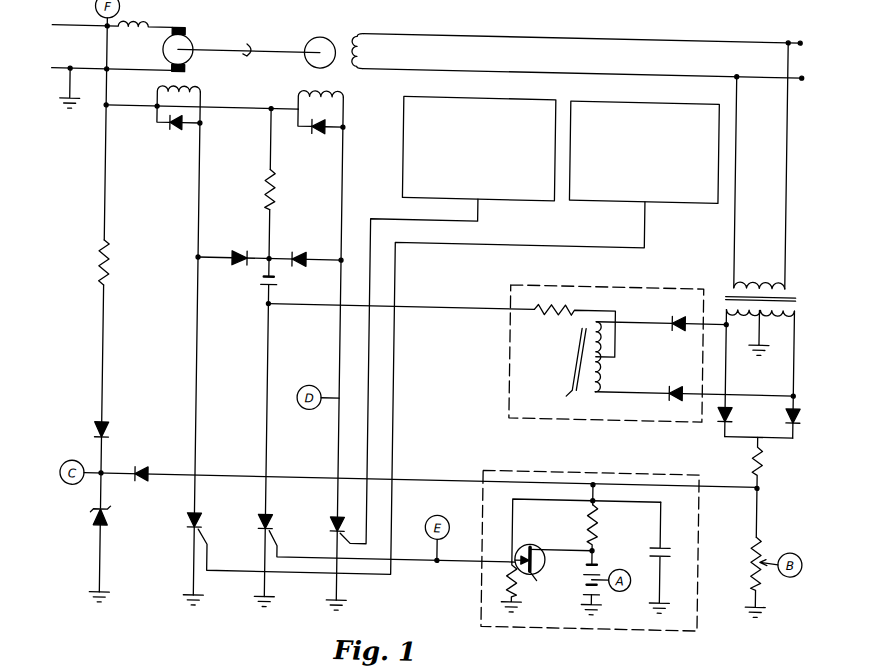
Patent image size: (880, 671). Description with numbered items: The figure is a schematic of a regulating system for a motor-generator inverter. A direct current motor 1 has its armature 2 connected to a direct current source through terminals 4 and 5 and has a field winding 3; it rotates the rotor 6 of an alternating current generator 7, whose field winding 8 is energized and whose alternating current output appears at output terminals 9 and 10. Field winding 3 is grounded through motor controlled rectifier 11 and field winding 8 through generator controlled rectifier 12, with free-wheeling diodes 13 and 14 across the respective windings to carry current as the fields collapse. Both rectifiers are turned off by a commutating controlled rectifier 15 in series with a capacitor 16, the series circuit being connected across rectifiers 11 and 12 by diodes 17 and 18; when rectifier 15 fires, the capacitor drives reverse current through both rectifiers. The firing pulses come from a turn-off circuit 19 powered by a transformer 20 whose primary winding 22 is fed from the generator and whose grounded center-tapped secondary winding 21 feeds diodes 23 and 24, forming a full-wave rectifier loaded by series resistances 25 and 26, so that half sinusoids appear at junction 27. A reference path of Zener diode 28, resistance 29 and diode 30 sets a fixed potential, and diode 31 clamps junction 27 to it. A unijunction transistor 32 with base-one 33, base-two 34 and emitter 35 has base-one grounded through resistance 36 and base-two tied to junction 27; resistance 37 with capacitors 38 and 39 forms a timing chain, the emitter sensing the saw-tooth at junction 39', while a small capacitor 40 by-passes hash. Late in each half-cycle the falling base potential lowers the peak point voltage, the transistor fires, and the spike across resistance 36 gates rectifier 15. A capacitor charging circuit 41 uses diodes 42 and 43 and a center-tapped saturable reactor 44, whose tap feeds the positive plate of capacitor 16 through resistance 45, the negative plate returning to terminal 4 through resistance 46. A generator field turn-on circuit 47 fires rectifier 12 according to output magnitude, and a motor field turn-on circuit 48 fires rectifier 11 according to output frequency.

The direct current motor 1 is at (193, 67).
The motor armature 2 is at (197, 42).
The motor field winding 3 is at (152, 89).
The positive terminal 4 is at (52, 26).
The terminal 5 is at (50, 70).
The rotor 6 is at (300, 39).
The alternating current generator 7 is at (302, 67).
The generator field winding 8 is at (339, 88).
The generator A.C. output terminal 9 is at (795, 27).
The generator A.C. output terminal 10 is at (795, 70).
The motor controlled rectifier 11 is at (189, 513).
The generator controlled rectifier 12 is at (332, 517).
The free-wheeling diode 13 is at (172, 131).
The free-wheeling diode 14 is at (317, 131).
The commutating controlled rectifier 15 is at (261, 512).
The capacitor 16 is at (273, 283).
The diode 17 is at (232, 245).
The diode 18 is at (301, 250).
The turn-off circuit 19 is at (489, 458).
The transformer 20 is at (790, 276).
The secondary winding 21 is at (776, 298).
The primary winding 22 is at (758, 271).
The diode 23 is at (719, 413).
The diode 24 is at (783, 402).
The resistance 25 is at (763, 449).
The resistance 26 is at (763, 536).
The junction 27 is at (595, 472).
The Zener diode 28 is at (93, 523).
The resistance 29 is at (94, 275).
The diode 30 is at (94, 425).
The diode 31 is at (148, 467).
The unijunction transistor 32 is at (536, 535).
The base-one element 33 is at (536, 569).
The base-two element 34 is at (514, 549).
The emitter element 35 is at (539, 542).
The resistance 36 is at (512, 574).
The resistance 37 is at (598, 512).
The capacitor 38 is at (596, 556).
The capacitor 39 is at (578, 602).
The junction 39' is at (611, 559).
The capacitor 40 is at (663, 540).
The capacitor charging circuit 41 is at (498, 394).
The diode 42 is at (680, 304).
The diode 43 is at (676, 375).
The saturable reactor 44 is at (586, 382).
The resistance 45 is at (551, 303).
The resistance 46 is at (262, 186).
The generator field turn-on circuit 47 is at (539, 193).
The motor field turn-on circuit 48 is at (619, 194).